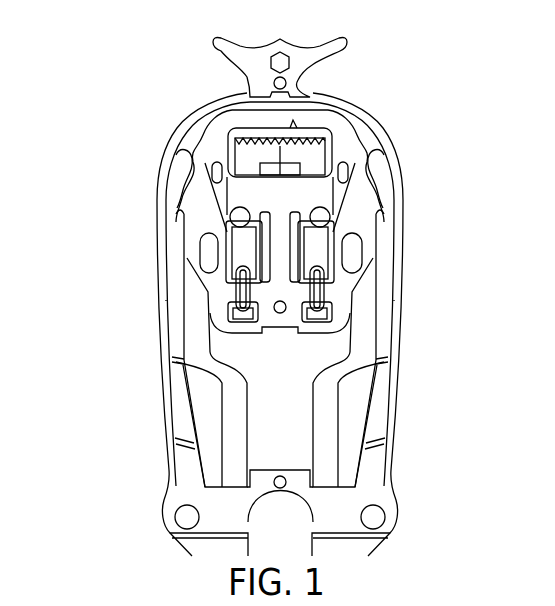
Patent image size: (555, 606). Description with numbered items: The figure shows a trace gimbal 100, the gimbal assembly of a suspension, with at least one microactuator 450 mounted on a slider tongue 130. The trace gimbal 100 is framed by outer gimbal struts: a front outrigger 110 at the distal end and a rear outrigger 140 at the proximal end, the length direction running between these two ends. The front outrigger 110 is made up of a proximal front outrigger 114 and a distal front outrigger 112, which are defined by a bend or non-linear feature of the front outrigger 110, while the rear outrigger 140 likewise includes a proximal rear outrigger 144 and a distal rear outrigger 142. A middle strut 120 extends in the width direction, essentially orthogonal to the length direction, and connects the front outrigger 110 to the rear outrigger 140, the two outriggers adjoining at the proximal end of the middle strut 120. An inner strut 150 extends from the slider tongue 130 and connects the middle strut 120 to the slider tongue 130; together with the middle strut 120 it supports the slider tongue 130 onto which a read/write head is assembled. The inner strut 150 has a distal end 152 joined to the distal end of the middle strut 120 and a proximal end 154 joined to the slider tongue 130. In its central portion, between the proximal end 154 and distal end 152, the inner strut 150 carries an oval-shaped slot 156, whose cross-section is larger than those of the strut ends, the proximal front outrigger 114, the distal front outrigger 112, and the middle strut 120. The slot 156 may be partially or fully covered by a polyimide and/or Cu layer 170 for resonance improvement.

The trace gimbal 100 is at (130, 120).
The front outrigger 110 is at (382, 108).
The distal front outrigger 112 is at (359, 92).
The proximal front outrigger 114 is at (391, 148).
The middle strut 120 is at (379, 198).
The slider tongue 130 is at (268, 309).
The rear outrigger 140 is at (404, 342).
The distal rear outrigger 142 is at (396, 233).
The proximal rear outrigger 144 is at (381, 430).
The inner strut 150 is at (351, 276).
The distal end of inner strut 152 is at (374, 203).
The proximal end of inner strut 154 is at (347, 288).
The slot 156 is at (356, 263).
The polyimide and/or Cu layer 170 is at (353, 253).
The microactuator 450 is at (247, 243).